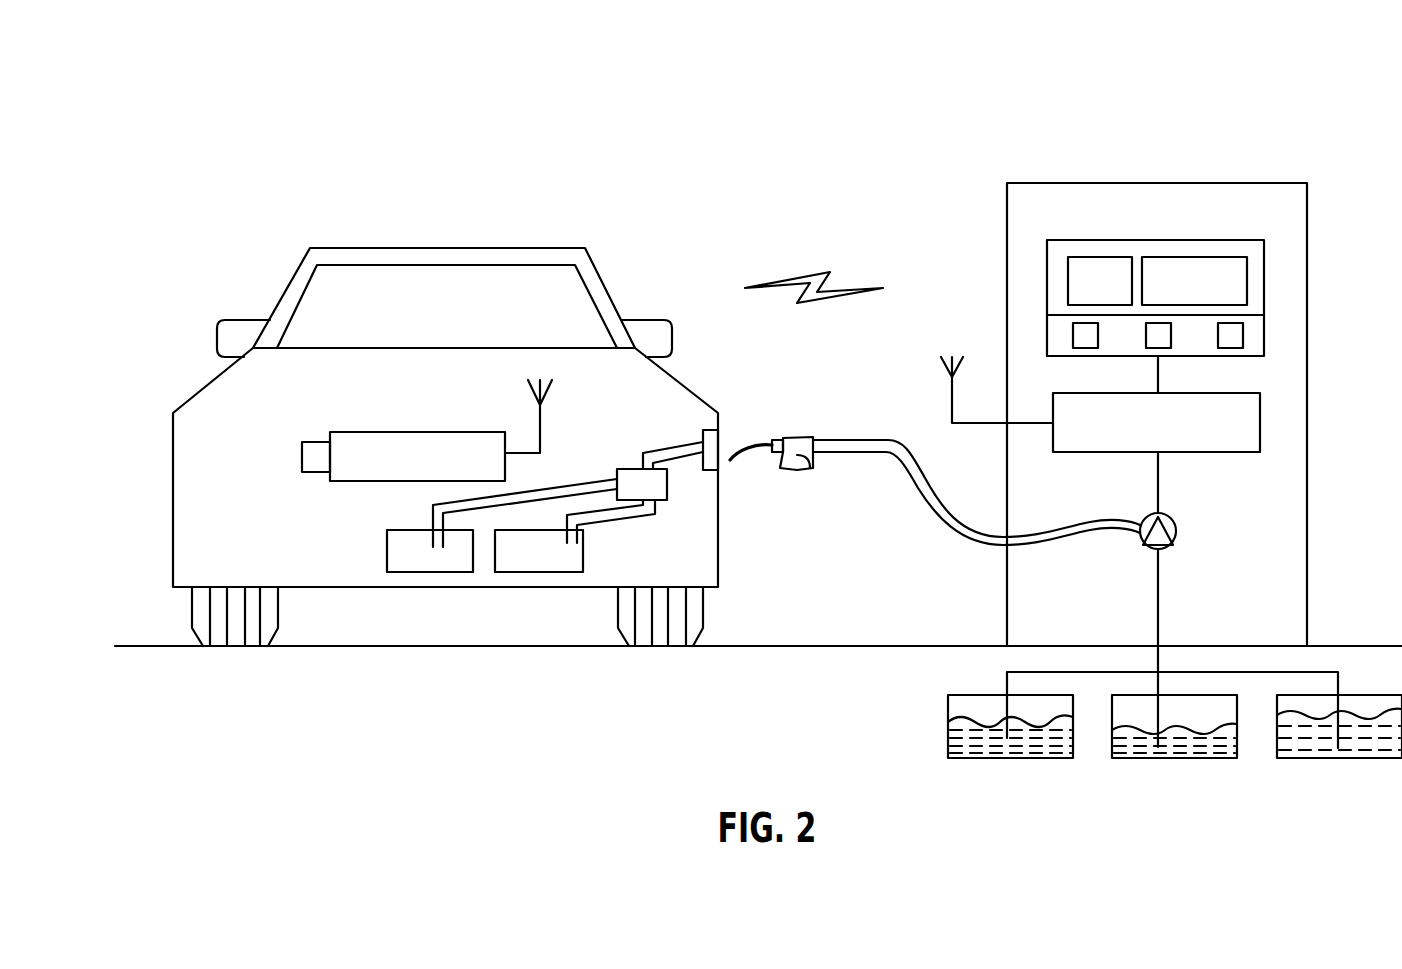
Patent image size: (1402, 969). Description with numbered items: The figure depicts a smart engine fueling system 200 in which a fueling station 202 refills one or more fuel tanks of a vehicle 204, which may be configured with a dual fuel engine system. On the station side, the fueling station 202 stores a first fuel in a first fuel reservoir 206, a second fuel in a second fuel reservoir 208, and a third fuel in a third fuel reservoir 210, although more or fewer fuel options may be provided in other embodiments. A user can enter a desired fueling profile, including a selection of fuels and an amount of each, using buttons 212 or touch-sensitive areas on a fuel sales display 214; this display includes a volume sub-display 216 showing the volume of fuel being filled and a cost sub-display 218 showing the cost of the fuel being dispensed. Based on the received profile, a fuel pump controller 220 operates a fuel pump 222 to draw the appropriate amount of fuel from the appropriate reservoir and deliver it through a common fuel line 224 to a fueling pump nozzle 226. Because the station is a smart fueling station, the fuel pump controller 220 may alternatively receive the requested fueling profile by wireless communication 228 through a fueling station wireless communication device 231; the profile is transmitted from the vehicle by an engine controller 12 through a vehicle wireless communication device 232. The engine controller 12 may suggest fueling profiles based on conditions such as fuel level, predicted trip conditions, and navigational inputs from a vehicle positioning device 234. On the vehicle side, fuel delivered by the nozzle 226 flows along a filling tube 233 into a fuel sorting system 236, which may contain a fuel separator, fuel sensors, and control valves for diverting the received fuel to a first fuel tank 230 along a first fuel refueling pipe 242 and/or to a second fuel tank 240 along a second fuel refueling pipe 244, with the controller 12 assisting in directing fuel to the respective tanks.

The fueling system 200 is at (1313, 95).
The fueling station 202 is at (1133, 183).
The vehicle 204 is at (403, 247).
The first fuel reservoir 206 is at (968, 758).
The second fuel reservoir 208 is at (1130, 758).
The third fuel reservoir 210 is at (1295, 758).
The buttons 212 is at (1235, 348).
The fuel sales display 214 is at (1222, 240).
The volume sub-display 216 is at (1150, 257).
The cost sub-display 218 is at (1085, 257).
The fuel pump controller 220 is at (1156, 422).
The fuel pump 222 is at (1172, 518).
The common fuel line 224 is at (1160, 606).
The fueling pump nozzle 226 is at (796, 438).
The wireless communication 228 is at (812, 270).
The first fuel tank 230 is at (513, 572).
The fueling station wireless communication device 231 is at (955, 425).
The vehicle wireless communication device 232 is at (545, 428).
The filling tube 233 is at (687, 446).
The vehicle positioning device 234 is at (318, 472).
The fuel sorting system 236 is at (667, 496).
The second fuel tank 240 is at (405, 572).
The first fuel refueling pipe 242 is at (603, 520).
The second fuel refueling pipe 244 is at (490, 505).
The engine controller 12 is at (417, 456).